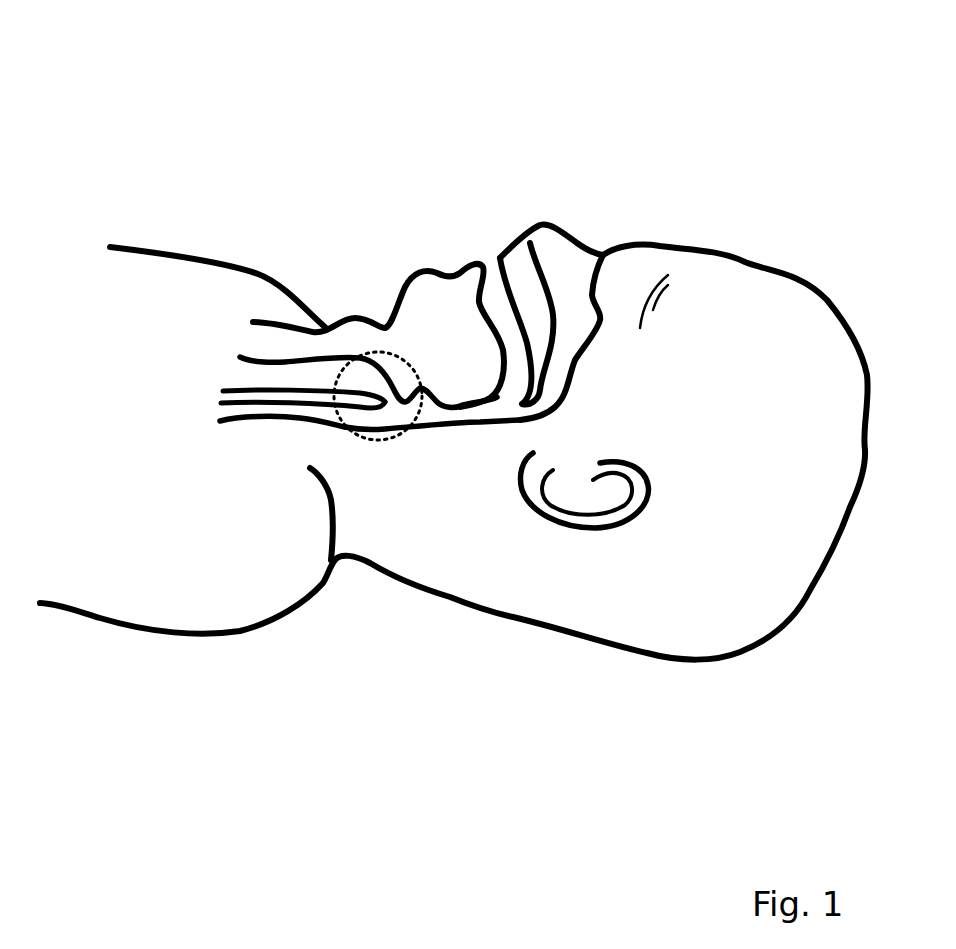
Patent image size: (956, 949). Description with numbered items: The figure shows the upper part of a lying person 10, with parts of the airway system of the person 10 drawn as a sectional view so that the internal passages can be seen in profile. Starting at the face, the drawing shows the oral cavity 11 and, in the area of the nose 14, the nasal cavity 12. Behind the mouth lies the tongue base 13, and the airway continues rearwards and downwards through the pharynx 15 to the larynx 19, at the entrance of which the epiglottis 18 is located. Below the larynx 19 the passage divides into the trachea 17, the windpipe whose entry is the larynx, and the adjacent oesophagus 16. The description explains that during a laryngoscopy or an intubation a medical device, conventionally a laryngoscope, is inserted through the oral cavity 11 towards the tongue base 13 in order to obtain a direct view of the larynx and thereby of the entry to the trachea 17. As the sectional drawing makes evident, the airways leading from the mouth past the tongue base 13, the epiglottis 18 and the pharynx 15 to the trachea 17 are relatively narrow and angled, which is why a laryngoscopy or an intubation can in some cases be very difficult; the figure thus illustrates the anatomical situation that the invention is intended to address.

The lying person 10 is at (212, 72).
The oral cavity 11 is at (500, 297).
The nasal cavity 12 is at (573, 293).
The tongue base 13 is at (477, 397).
The nose 14 is at (546, 225).
The pharynx 15 is at (502, 427).
The oesophagus 16 is at (220, 421).
The trachea 17 is at (247, 373).
The epiglottis 18 is at (402, 390).
The larynx 19 is at (387, 440).